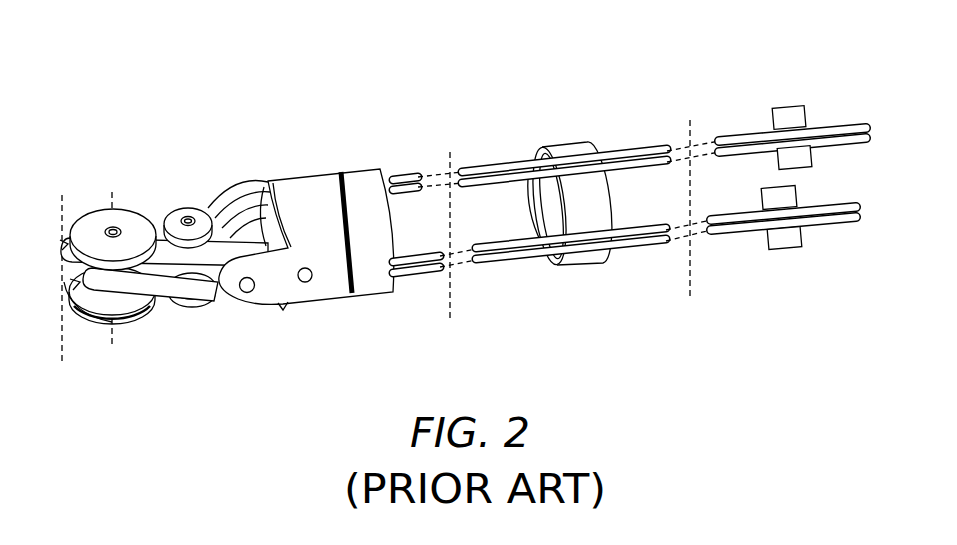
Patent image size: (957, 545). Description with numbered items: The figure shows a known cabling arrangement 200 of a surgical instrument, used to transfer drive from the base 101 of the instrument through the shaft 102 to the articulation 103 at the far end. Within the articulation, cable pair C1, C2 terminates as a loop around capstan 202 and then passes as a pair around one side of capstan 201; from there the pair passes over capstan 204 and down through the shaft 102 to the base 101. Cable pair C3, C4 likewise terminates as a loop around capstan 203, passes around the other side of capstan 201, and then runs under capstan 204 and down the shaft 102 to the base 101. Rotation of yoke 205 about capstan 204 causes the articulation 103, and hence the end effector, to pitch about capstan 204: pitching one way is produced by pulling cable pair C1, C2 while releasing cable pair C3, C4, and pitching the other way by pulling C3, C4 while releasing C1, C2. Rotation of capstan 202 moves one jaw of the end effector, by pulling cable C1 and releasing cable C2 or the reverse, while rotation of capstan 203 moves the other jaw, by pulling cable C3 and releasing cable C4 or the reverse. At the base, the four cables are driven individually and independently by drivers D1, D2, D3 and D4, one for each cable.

The cabling arrangement 200 is at (586, 74).
The base 101 is at (866, 284).
The shaft 102 is at (690, 303).
The articulation 103 is at (451, 332).
The capstan 201 is at (189, 221).
The capstan 202 is at (115, 231).
The capstan 203 is at (128, 298).
The capstan 204 is at (248, 287).
The yoke 205 is at (193, 276).
The cable C1 is at (490, 245).
The cable C2 is at (497, 264).
The cable C3 is at (490, 168).
The cable C4 is at (500, 182).
The driver D1 is at (766, 196).
The driver D2 is at (788, 249).
The driver D3 is at (789, 107).
The driver D4 is at (809, 158).